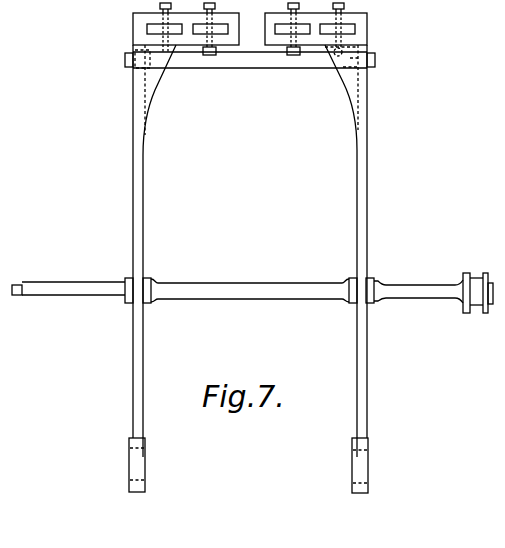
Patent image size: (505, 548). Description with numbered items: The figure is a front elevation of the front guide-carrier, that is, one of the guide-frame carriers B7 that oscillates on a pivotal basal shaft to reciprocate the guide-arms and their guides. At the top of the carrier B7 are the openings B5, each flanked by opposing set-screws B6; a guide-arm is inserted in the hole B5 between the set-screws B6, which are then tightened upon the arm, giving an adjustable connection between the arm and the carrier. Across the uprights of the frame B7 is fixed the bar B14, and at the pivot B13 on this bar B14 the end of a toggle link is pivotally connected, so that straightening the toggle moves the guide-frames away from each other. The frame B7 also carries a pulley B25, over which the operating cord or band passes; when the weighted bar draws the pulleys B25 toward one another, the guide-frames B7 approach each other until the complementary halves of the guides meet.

The openings B5 is at (283, 31).
The set-screws B6 is at (373, 17).
The guide-frame carrier B7 is at (376, 205).
The pivot B13 is at (17, 284).
The bar B14 is at (249, 287).
The pulley B25 is at (477, 282).